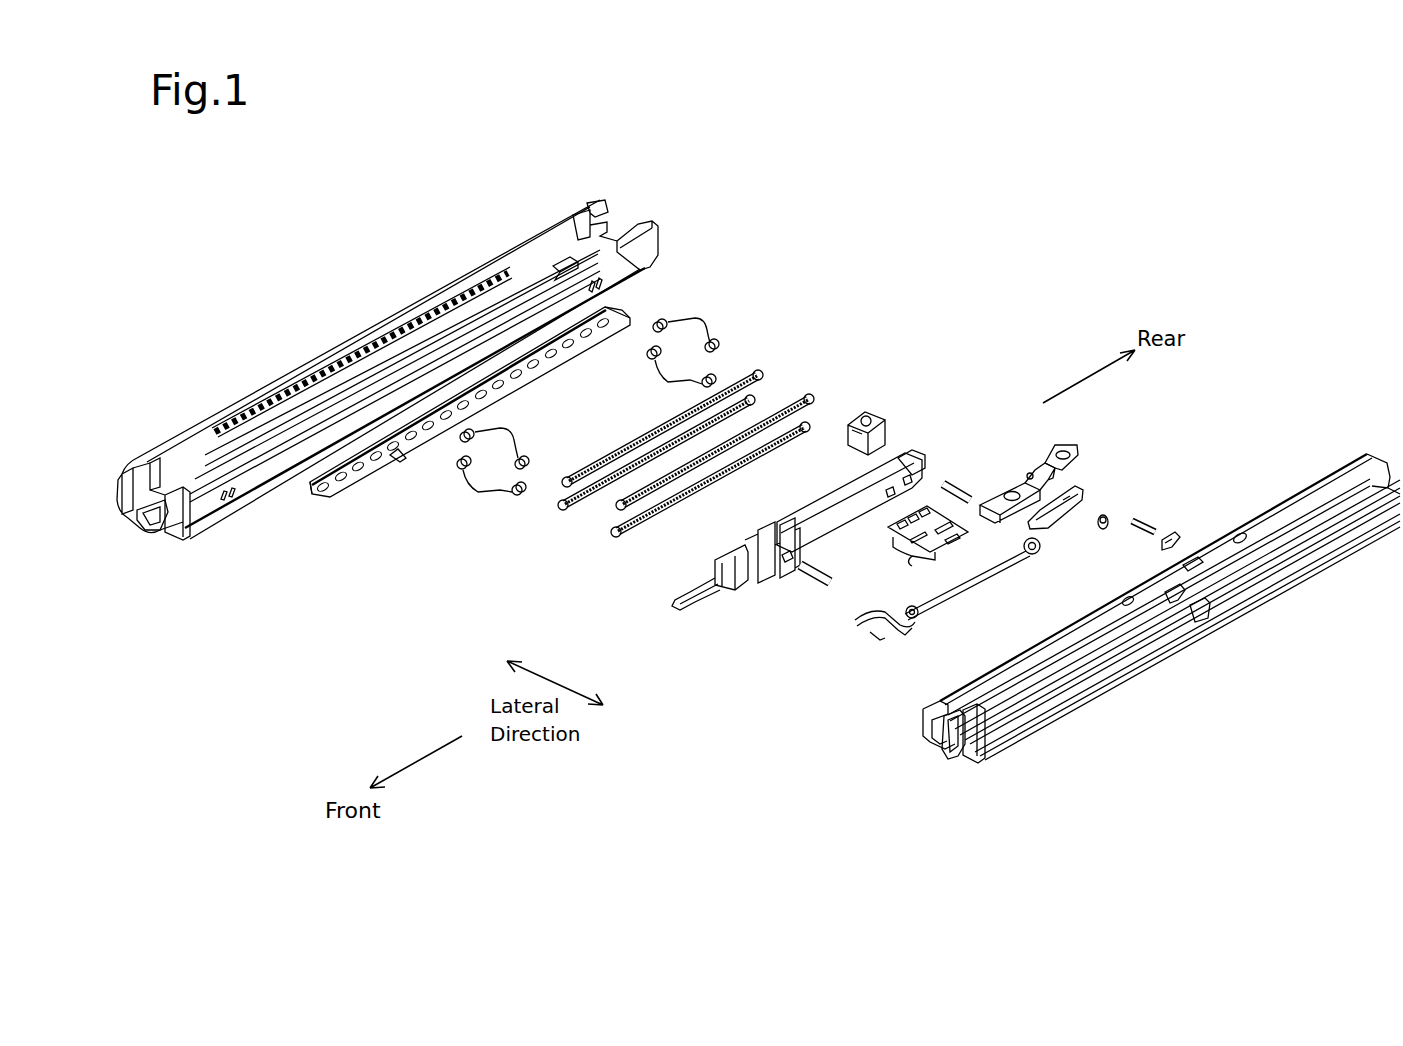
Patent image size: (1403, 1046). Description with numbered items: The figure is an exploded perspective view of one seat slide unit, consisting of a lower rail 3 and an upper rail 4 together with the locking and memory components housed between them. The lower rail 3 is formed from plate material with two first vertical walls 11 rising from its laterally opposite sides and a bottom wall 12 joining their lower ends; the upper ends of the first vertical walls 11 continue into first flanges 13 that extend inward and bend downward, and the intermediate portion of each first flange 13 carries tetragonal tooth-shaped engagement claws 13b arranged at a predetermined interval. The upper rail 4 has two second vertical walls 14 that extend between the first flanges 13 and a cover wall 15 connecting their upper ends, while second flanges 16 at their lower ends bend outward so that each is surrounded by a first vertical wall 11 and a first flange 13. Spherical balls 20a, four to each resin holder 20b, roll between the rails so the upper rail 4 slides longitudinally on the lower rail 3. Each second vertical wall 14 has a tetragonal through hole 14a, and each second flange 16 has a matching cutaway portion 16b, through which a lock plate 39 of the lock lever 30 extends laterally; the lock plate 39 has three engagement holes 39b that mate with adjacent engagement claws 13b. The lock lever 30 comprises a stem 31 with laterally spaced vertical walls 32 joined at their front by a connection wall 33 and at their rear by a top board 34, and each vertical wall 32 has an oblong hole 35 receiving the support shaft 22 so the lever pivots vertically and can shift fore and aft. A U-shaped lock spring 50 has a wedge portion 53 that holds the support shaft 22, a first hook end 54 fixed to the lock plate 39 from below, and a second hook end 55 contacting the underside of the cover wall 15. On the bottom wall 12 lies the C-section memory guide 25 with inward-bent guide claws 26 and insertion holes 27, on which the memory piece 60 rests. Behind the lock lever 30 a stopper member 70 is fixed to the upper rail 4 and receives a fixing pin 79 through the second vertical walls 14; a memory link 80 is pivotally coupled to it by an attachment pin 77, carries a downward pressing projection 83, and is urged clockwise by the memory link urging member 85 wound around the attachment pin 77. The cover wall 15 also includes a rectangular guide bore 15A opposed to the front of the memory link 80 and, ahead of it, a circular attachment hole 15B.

The lower rail 3 is at (543, 211).
The upper rail 4 is at (1358, 448).
The first vertical wall 11 is at (117, 480).
The bottom wall 12 is at (140, 522).
The first flange 13 is at (200, 487).
The engagement claw 13b is at (257, 420).
The second vertical wall 14 is at (945, 748).
The through hole 14a is at (1165, 590).
The cover wall 15 is at (1013, 659).
The guide bore 15A is at (1193, 560).
The attachment hole 15B is at (1125, 600).
The second flange 16 is at (920, 718).
The cutaway portion 16b is at (1203, 615).
The ball 20a is at (592, 408).
The holder 20b is at (563, 486).
The support shaft 22 is at (825, 572).
The memory guide 25 is at (324, 503).
The guide claw 26 is at (310, 487).
The insertion hole 27 is at (398, 456).
The lock lever 30 is at (822, 499).
The stem 31 is at (900, 462).
The vertical wall 32 is at (715, 564).
The connection wall 33 is at (738, 557).
The top board 34 is at (828, 500).
The oblong hole 35 is at (790, 560).
The lock plate 39 is at (935, 512).
The engagement hole 39b is at (917, 547).
The lock spring 50 is at (860, 635).
The wedge portion 53 is at (918, 622).
The first hook end 54 is at (1020, 545).
The second hook end 55 is at (872, 604).
The memory piece 60 is at (860, 402).
The stopper member 70 is at (1083, 442).
The attachment pin 77 is at (1145, 518).
The fixing pin 79 is at (958, 486).
The memory link 80 is at (1092, 487).
The pressing projection 83 is at (1105, 515).
The memory link urging member 85 is at (1170, 530).